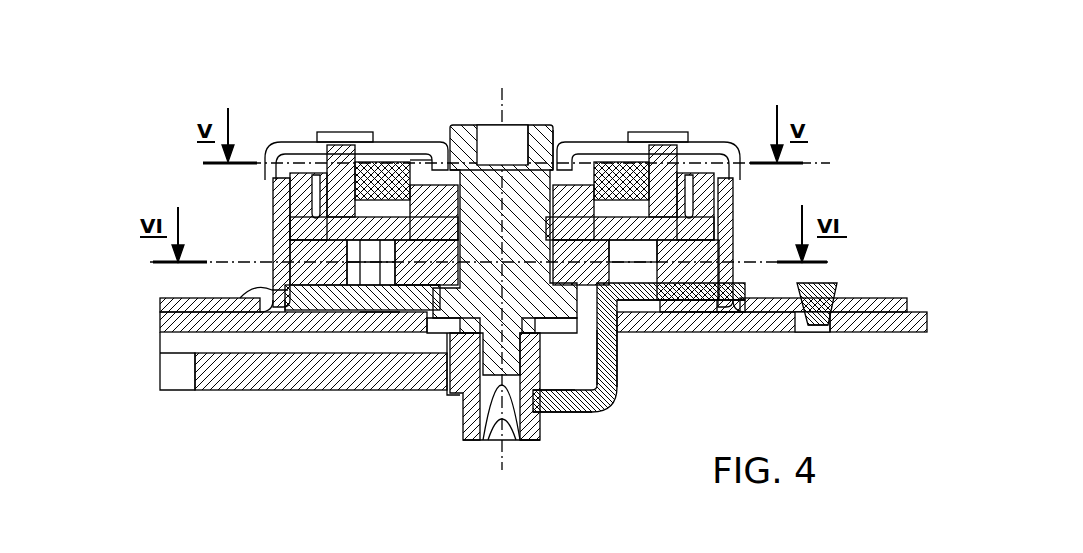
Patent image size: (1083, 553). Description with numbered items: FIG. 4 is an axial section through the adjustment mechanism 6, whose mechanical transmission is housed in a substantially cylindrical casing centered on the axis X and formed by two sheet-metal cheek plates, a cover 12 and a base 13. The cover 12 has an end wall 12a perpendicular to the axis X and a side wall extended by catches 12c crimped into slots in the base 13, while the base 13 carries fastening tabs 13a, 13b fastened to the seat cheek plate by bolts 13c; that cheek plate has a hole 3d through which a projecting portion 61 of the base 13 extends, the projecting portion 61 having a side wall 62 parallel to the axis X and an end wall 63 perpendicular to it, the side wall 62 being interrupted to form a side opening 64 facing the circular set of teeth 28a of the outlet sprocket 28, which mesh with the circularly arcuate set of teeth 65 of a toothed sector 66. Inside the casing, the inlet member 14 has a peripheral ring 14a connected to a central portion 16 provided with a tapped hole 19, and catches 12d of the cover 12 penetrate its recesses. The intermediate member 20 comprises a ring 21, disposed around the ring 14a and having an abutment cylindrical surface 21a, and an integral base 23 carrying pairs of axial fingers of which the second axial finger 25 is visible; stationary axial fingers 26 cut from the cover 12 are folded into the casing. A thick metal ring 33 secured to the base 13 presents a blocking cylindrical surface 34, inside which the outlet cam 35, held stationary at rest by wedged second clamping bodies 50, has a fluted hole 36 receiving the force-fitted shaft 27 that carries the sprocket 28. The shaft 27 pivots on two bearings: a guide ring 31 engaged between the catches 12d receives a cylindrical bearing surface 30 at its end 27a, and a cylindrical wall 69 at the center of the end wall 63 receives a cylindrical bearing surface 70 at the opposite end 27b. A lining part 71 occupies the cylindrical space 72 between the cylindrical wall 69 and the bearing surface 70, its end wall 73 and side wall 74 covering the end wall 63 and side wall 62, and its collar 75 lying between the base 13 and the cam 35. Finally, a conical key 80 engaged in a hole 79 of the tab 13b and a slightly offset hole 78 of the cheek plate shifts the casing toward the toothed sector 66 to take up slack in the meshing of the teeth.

The hole 3d is at (677, 312).
The adjustment mechanism 6 is at (748, 118).
The cover 12 is at (738, 200).
The end wall 12a is at (352, 160).
The catches 12c is at (728, 290).
The catches 12d is at (423, 160).
The base 13 is at (543, 322).
The fastening tab 13a is at (178, 300).
The fastening tab 13b is at (906, 298).
The bolts 13c is at (162, 334).
The inlet member 14 is at (608, 142).
The peripheral ring 14a is at (622, 185).
The central portion 16 is at (540, 128).
The tapped hole 19 is at (489, 125).
The intermediate member 20 is at (300, 150).
The ring 21 is at (296, 186).
The abutment cylindrical surface 21a is at (312, 195).
The base 23 is at (287, 236).
The second axial finger 25 is at (730, 306).
The axial fingers 26 is at (322, 152).
The shaft 27 is at (562, 185).
The end 27a is at (556, 150).
The end 27b is at (508, 437).
The outlet sprocket 28 is at (614, 364).
The circular set of teeth 28a is at (614, 394).
The cylindrical bearing surface 30 is at (455, 180).
The guide ring 31 is at (415, 165).
The thick metal ring 33 is at (702, 255).
The blocking cylindrical surface 34 is at (282, 268).
The outlet cam 35 is at (370, 335).
The fluted hole 36 is at (395, 300).
The second clamping bodies 50 is at (292, 312).
The projecting portion 61 is at (611, 414).
The side wall 62 is at (615, 380).
The end wall 63 is at (558, 410).
The side opening 64 is at (447, 397).
The circularly arcuate set of teeth 65 is at (440, 376).
The toothed sector 66 is at (352, 264).
The cylindrical wall 69 is at (533, 437).
The cylindrical bearing surface 70 is at (500, 443).
The lining part 71 is at (565, 412).
The cylindrical space 72 is at (475, 440).
The end wall 73 is at (462, 418).
The side wall 74 is at (577, 355).
The collar 75 is at (703, 332).
The hole 78 is at (840, 332).
The hole 79 is at (882, 332).
The conical key 80 is at (838, 284).
The axis X is at (510, 100).